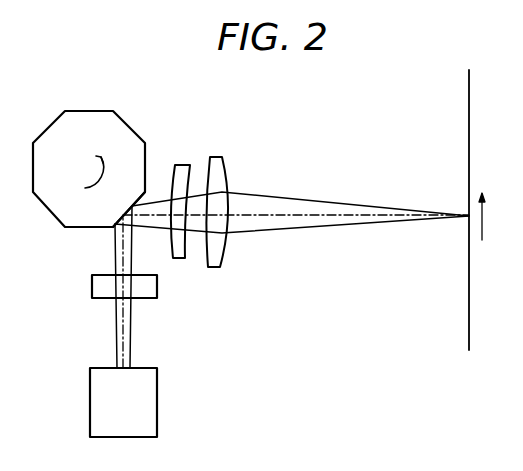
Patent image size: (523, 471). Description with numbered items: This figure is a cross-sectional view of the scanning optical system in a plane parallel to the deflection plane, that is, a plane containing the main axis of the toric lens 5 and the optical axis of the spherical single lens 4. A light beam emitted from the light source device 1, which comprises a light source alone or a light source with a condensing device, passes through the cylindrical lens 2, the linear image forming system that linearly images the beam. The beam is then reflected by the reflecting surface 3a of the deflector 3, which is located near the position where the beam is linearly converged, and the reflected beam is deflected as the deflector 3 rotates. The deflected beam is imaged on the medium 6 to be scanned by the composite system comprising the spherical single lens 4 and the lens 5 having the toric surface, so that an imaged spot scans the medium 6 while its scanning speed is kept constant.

The light source device 1 is at (157, 398).
The linear image forming system 2 is at (157, 287).
The deflector 3 is at (89, 111).
The deflecting and reflecting surface 3a is at (118, 226).
The single spherical lens 4 is at (180, 165).
The single lens having a toric surface 5 is at (216, 157).
The medium to be scanned 6 is at (469, 100).